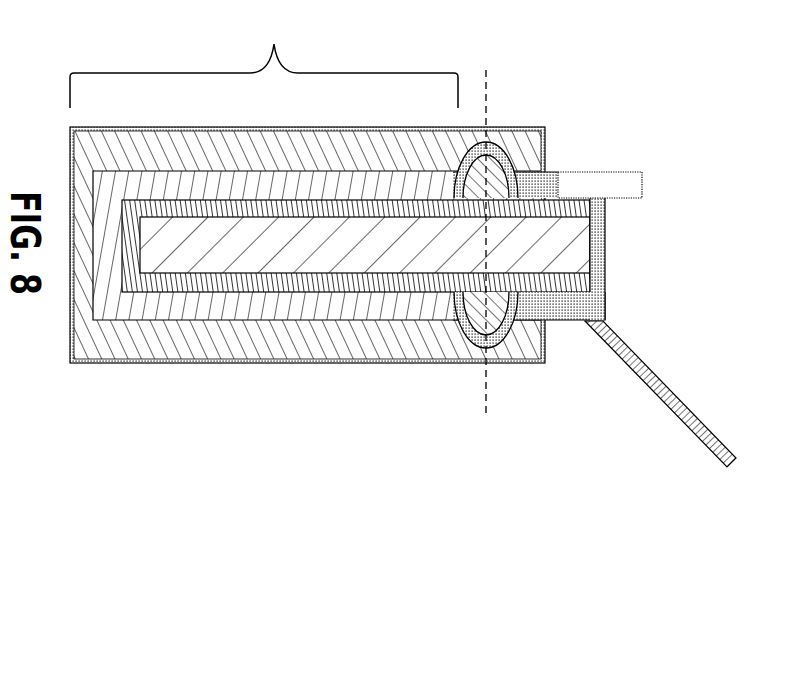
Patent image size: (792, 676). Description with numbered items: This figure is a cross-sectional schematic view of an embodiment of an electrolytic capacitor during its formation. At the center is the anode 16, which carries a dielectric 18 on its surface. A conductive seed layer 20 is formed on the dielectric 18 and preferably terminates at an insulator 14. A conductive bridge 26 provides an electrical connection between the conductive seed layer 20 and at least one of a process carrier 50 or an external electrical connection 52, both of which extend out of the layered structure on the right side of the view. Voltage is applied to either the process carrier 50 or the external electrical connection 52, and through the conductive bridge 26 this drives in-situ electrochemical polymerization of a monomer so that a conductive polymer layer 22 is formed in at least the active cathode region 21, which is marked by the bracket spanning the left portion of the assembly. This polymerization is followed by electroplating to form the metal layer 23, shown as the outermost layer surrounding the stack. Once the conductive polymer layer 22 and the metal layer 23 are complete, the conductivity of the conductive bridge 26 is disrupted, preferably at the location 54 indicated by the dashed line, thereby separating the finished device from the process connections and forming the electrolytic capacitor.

The insulator 14 is at (484, 196).
The anode 16 is at (570, 237).
The dielectric 18 is at (555, 285).
The conductive seed layer 20 is at (440, 310).
The active cathode region 21 is at (264, 64).
The conductive polymer layer 22 is at (338, 337).
The metal layer 23 is at (135, 362).
The conductive bridge 26 is at (546, 177).
The process carrier 50 is at (620, 182).
The external electrical connection 52 is at (713, 435).
The disruption location 54 is at (486, 413).